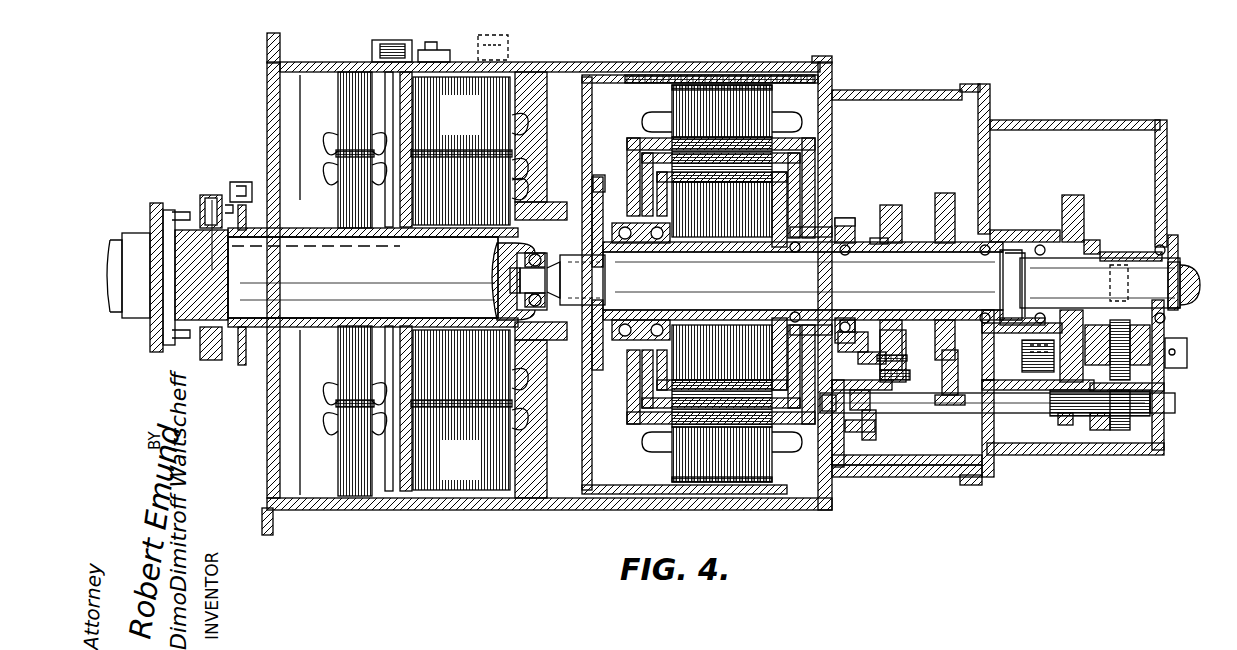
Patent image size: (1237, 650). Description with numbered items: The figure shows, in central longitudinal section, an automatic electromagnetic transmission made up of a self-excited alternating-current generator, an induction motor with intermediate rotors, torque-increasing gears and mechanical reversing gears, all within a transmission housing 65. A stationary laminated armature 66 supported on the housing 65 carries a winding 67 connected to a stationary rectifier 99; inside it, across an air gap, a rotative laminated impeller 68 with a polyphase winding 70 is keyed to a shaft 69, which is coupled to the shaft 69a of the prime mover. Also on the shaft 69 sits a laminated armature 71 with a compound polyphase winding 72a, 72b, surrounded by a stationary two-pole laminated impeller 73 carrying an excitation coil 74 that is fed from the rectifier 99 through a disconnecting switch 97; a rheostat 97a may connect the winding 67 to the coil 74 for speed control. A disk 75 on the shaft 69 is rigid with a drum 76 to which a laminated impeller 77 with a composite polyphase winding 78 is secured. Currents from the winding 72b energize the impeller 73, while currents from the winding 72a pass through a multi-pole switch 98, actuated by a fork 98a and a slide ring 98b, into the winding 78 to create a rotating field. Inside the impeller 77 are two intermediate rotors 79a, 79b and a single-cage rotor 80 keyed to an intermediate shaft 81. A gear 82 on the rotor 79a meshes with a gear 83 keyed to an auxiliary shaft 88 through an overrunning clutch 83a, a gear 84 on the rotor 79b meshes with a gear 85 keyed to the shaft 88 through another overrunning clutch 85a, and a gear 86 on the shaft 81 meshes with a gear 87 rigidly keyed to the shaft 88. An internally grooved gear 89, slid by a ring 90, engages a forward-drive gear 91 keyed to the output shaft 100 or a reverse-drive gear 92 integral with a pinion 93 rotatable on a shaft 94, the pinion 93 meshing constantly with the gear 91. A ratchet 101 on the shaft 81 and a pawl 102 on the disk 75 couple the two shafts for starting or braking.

The transmission housing 65 is at (628, 70).
The stationary laminated armature 66 is at (350, 75).
The winding 67 is at (330, 128).
The rotative laminated impeller 68 is at (350, 240).
The shaft 69 is at (245, 300).
The shaft of the prime mover 69a is at (132, 318).
The polyphase winding 70 is at (340, 183).
The laminated armature 71 is at (455, 235).
The winding 72a is at (528, 175).
The winding 72b is at (402, 230).
The stationary two-pole laminated impeller 73 is at (497, 78).
The excitation coil 74 is at (528, 125).
The disk 75 is at (588, 85).
The drum 76 is at (780, 80).
The laminated impeller 77 is at (715, 90).
The composite polyphase winding 78 is at (790, 118).
The intermediate rotor 79a is at (625, 140).
The intermediate rotor 79b is at (645, 158).
The single-cage rotor 80 is at (722, 240).
The intermediate shaft 81 is at (900, 268).
The gear 82 is at (845, 218).
The gear 83 is at (845, 462).
The overrunning clutch 83a is at (858, 412).
The gear 84 is at (890, 205).
The gear 85 is at (890, 412).
The overrunning clutch 85a is at (900, 385).
The gear 86 is at (945, 193).
The gear 87 is at (950, 410).
The auxiliary shaft 88 is at (1015, 405).
The internally grooved gear 89 is at (1095, 432).
The ring 90 is at (1060, 425).
The forward-drive gear 91 is at (1074, 195).
The reverse-drive gear 92 is at (1128, 432).
The pinion 93 is at (1093, 300).
The shaft 94 is at (1022, 357).
The disconnecting switch 97 is at (440, 48).
The rheostat 97a is at (495, 35).
The multi-pole switch 98 is at (210, 195).
The fork 98a is at (242, 182).
The slide ring 98b is at (244, 340).
The rectifier 99 is at (395, 40).
The output shaft 100 is at (1190, 265).
The ratchet 101 is at (605, 255).
The pawl 102 is at (592, 185).